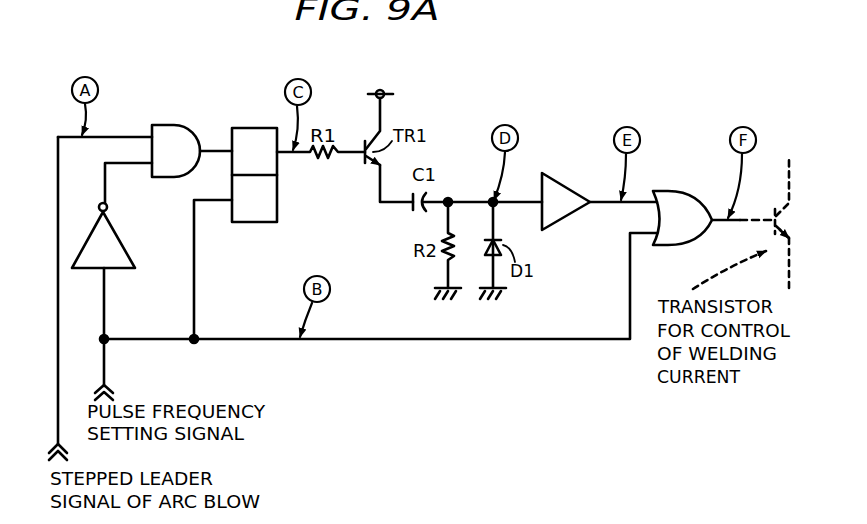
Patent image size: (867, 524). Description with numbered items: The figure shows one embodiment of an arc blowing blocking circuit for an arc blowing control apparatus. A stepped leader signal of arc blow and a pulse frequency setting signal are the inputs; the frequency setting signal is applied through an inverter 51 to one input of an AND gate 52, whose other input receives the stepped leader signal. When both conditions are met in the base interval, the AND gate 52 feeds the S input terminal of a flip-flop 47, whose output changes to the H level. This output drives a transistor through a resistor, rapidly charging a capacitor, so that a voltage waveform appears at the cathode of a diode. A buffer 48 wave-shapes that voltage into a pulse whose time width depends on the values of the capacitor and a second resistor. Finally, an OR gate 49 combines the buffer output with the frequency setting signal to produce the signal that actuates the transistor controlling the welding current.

The flip-flop 47 is at (253, 128).
The buffer 48 is at (567, 183).
The OR gate 49 is at (678, 191).
The inverter 51 is at (120, 234).
The AND gate 52 is at (175, 125).